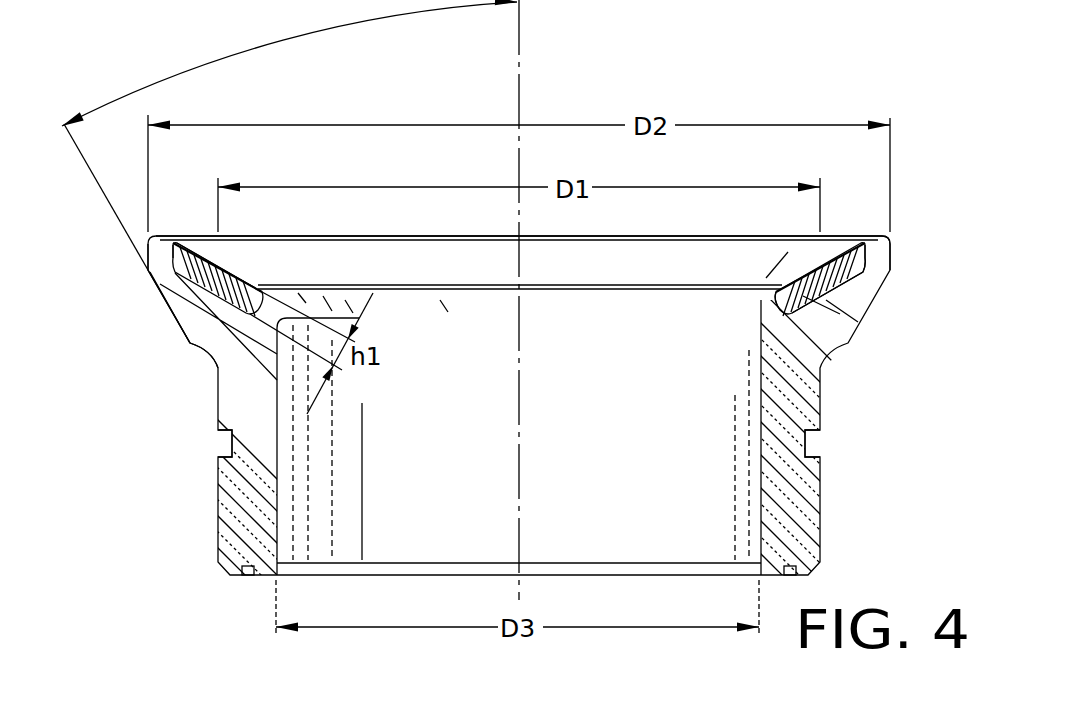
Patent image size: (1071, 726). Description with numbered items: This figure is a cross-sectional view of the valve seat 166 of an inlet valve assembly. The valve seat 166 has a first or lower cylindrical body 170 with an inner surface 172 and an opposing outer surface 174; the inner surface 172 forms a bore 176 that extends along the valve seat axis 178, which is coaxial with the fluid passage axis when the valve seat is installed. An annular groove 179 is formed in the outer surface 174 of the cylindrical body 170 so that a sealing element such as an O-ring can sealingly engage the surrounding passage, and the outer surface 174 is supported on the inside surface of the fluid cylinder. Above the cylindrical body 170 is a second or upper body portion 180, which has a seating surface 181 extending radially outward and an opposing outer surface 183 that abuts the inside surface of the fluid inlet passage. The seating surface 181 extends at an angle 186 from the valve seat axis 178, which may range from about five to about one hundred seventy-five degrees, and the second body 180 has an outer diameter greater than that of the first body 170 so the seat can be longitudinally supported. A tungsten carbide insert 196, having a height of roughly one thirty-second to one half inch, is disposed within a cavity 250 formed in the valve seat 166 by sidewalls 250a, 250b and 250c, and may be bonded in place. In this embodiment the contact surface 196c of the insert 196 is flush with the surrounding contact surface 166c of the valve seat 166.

The valve seat 166 is at (492, 231).
The contact surface of the valve seat 166c is at (171, 242).
The cylindrical body 170 is at (218, 510).
The inner surface 172 is at (278, 500).
The outer surface 174 is at (826, 528).
The bore 176 is at (278, 443).
The valve seat axis 178 is at (521, 428).
The annular groove 179 is at (232, 443).
The second body portion 180 is at (149, 281).
The seating surface 181 is at (836, 242).
The outer surface of the second body 183 is at (170, 316).
The angle 186 is at (281, 34).
The tungsten carbide insert 196 is at (260, 258).
The contact surface of the insert 196c is at (233, 272).
The cavity 250 is at (855, 315).
The sidewall 250a is at (868, 266).
The sidewall 250b is at (779, 293).
The sidewall 250c is at (835, 297).